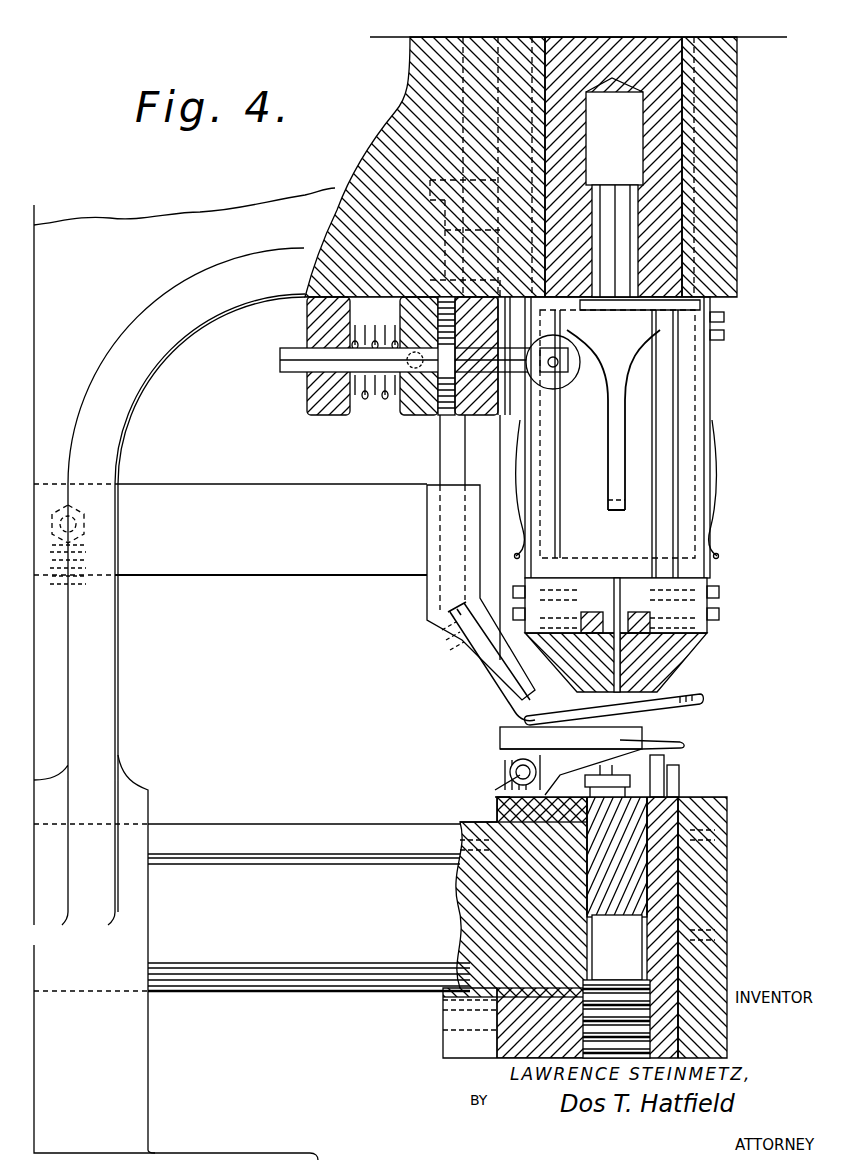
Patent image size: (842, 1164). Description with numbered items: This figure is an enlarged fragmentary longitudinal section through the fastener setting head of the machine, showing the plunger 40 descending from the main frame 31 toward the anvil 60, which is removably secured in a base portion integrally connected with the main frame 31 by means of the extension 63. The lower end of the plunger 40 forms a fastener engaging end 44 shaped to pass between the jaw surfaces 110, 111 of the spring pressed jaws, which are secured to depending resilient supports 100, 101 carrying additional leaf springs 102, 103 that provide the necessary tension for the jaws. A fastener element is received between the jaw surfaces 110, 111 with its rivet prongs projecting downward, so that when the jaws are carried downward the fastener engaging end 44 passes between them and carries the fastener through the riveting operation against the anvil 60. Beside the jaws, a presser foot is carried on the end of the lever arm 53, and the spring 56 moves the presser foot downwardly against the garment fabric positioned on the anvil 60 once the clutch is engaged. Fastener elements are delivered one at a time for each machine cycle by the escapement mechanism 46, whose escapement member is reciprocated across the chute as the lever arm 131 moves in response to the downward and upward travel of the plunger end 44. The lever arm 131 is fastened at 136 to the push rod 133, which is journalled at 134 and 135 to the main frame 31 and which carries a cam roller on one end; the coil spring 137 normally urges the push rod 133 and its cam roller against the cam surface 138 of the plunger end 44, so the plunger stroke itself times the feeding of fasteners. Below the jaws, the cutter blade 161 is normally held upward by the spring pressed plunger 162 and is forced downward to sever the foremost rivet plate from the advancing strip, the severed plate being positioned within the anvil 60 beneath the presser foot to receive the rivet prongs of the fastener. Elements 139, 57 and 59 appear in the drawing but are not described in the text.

The plunger 40 is at (660, 45).
The main frame 31 is at (140, 318).
The journal 135 is at (305, 322).
The fastening point 136 is at (382, 330).
The push rod 133 is at (280, 363).
The journal 134 is at (440, 415).
The coil spring 137 is at (350, 413).
The lever arm 131 is at (410, 537).
The cam surface 138 is at (560, 355).
The plunger 139 is at (580, 372).
The resilient support 100 is at (690, 416).
The fastener engaging end 44 is at (616, 468).
The leaf spring 102 is at (712, 512).
The resilient support 101 is at (566, 531).
The leaf spring 103 is at (520, 472).
The spring 56 is at (115, 552).
The lever arm 53 is at (222, 570).
The escapement mechanism 46 is at (440, 662).
The jaw surface 110 is at (700, 660).
The nozzle 57 is at (680, 676).
The jaw surface 111 is at (556, 696).
The lever arm 59 is at (702, 701).
The cutter blade 161 is at (620, 757).
The spring pressed plunger 162 is at (680, 777).
The anvil 60 is at (630, 888).
The extension 63 is at (335, 985).